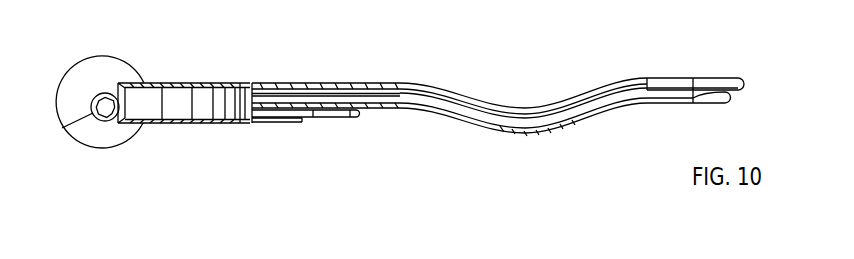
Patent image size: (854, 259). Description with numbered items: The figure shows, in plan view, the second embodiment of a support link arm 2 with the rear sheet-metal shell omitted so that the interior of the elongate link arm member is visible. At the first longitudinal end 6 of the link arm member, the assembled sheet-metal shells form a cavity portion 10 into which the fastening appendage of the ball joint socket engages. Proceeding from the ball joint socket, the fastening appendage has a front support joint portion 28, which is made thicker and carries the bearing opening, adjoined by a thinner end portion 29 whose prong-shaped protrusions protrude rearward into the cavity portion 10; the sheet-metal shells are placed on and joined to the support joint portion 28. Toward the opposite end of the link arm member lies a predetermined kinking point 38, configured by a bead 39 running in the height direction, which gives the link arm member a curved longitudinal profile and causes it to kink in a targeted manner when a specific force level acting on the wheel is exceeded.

The support link arm 2 is at (186, 54).
The first longitudinal end 6 is at (281, 52).
The cavity portion 10 is at (318, 77).
The front support joint portion 28 is at (183, 124).
The end portion 29 is at (305, 120).
The predetermined kinking point 38 is at (551, 93).
The bead 39 is at (525, 108).